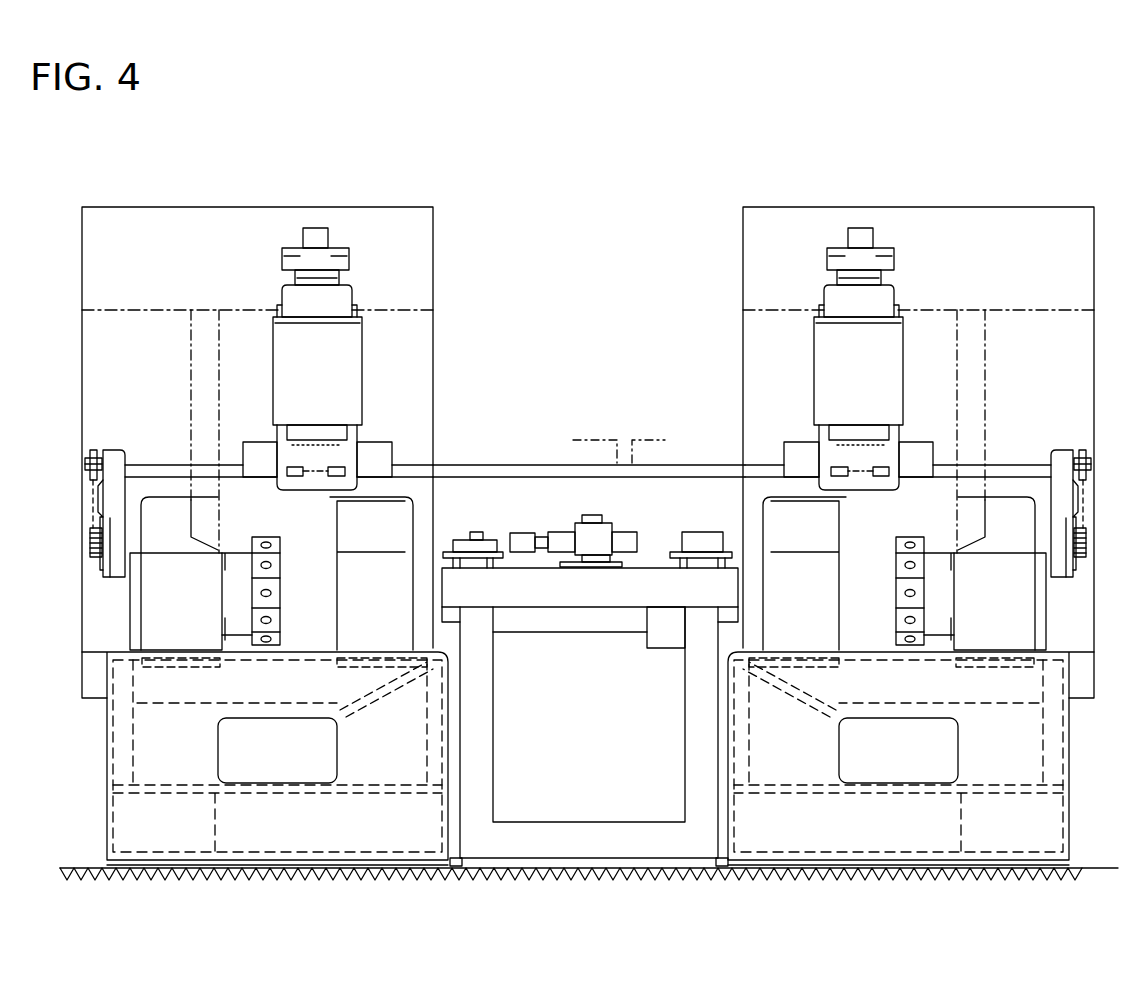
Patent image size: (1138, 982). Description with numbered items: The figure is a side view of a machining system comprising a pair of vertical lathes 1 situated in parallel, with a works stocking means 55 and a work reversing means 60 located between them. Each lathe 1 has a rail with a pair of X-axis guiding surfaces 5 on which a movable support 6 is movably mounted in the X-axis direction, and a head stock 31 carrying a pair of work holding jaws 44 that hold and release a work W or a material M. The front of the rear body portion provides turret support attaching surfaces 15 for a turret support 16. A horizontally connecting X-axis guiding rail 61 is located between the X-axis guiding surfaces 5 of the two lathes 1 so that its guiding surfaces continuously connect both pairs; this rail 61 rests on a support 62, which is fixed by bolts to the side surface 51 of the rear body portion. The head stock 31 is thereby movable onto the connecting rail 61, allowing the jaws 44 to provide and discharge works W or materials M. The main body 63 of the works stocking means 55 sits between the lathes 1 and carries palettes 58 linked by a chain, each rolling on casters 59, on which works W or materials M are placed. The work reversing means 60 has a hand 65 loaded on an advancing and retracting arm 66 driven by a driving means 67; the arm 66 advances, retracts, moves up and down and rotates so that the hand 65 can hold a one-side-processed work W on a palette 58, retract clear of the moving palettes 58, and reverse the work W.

The lathe 1 is at (424, 192).
The X-axis guiding surfaces 5 is at (167, 473).
The movable support 6 is at (445, 447).
The turret support attaching surfaces 15 is at (392, 631).
The turret support 16 is at (184, 636).
The head stock 31 is at (326, 391).
The work holding jaws 44 is at (293, 458).
The side surface 51 is at (447, 514).
The works stocking means 55 is at (685, 497).
The palettes 58 is at (447, 555).
The casters 59 is at (717, 560).
The work reversing means 60 is at (633, 509).
The horizontally connecting X-axis guiding rail 61 is at (532, 464).
The support 62 is at (473, 480).
The main body 63 is at (482, 763).
The hand 65 is at (525, 534).
The advancing and retracting arm 66 is at (558, 543).
The advancing and retracting arm driving means 67 is at (600, 543).
The work W is at (470, 537).
The material M is at (705, 533).